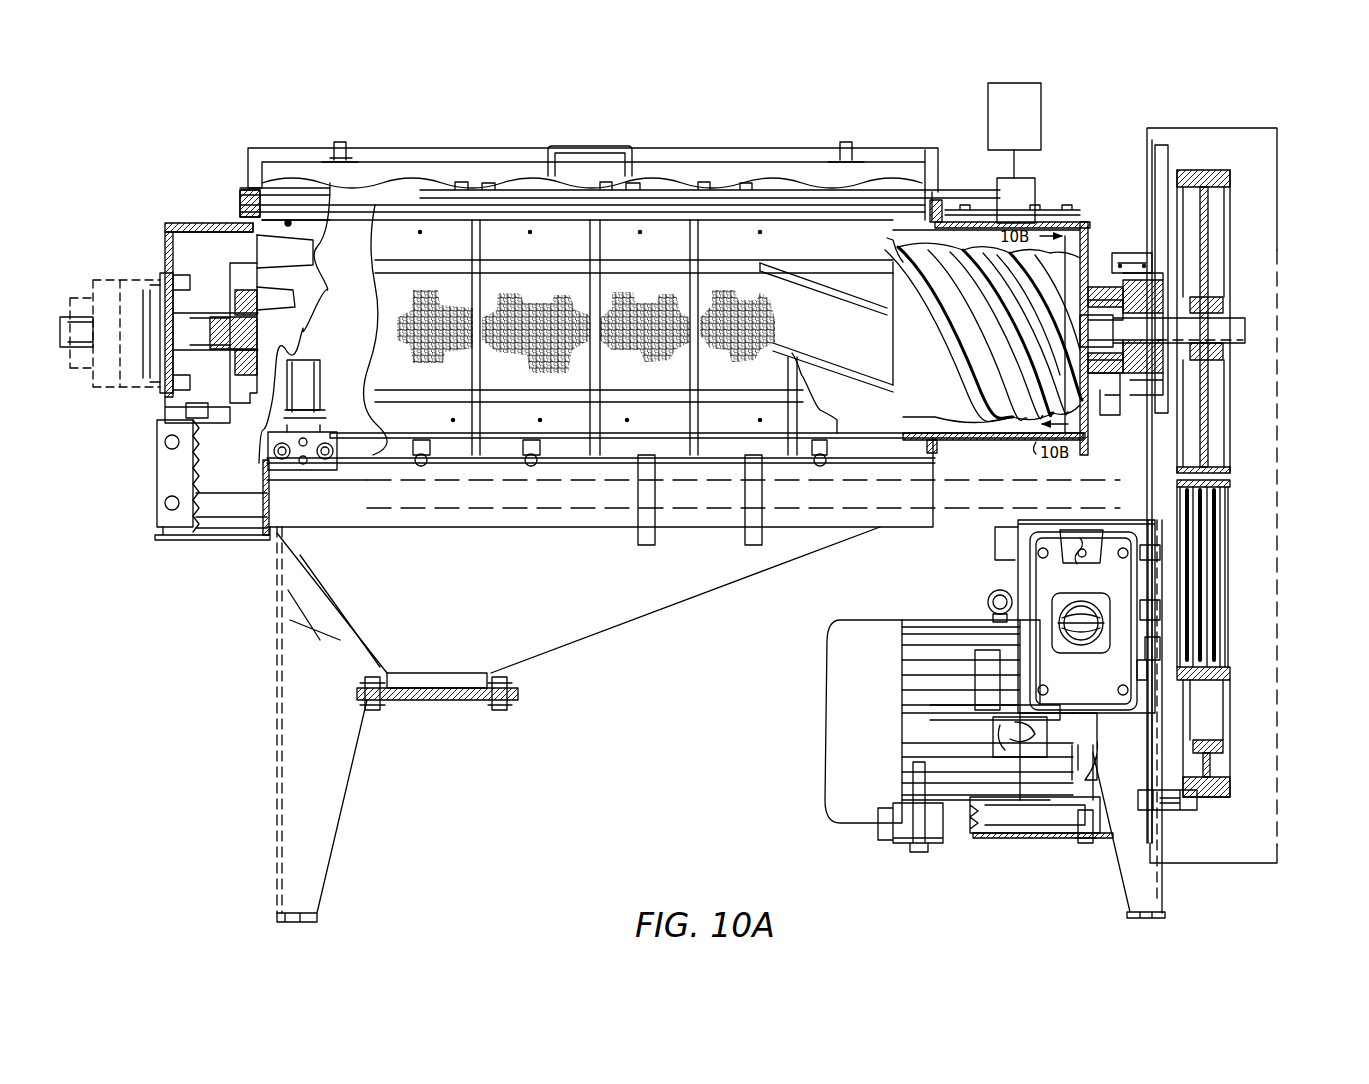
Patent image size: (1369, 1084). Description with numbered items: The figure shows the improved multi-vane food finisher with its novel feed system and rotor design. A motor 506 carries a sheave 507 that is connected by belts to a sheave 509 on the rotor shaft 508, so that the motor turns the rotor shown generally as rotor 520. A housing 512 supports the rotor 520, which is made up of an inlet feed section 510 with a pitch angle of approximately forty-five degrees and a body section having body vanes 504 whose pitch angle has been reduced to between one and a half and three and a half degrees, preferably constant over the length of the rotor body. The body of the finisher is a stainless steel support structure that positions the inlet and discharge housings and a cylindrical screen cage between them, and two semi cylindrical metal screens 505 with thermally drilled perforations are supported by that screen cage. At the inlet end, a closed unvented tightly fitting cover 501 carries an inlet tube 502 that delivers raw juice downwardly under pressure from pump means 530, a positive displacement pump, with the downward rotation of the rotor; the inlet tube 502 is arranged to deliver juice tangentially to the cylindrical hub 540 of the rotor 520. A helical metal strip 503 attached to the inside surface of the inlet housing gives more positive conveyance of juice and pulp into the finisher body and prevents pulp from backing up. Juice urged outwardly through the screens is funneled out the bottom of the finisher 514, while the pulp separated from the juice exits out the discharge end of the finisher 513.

The cover 501 is at (1052, 212).
The inlet tube 502 is at (1036, 185).
The helical metal strip 503 is at (1003, 440).
The body vanes 504 is at (810, 353).
The semi cylindrical metal screens 505 is at (540, 290).
The motor 506 is at (852, 732).
The sheave 507 is at (1232, 700).
The rotor shaft 508 is at (1248, 322).
The sheave 509 is at (1228, 225).
The inlet feed section 510 is at (940, 232).
The housing 512 is at (230, 222).
The discharge end 513 is at (235, 542).
The bottom of the finisher 514 is at (437, 700).
The rotor 520 is at (876, 282).
The pump means 530 is at (1046, 88).
The cylindrical hub 540 is at (1085, 270).